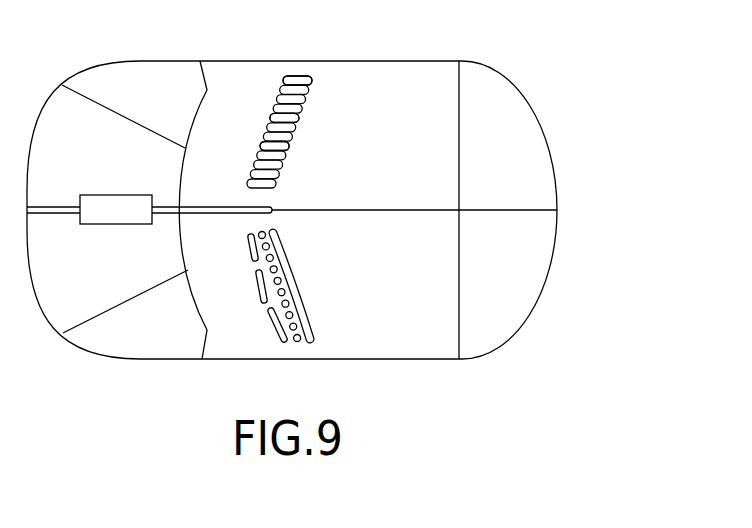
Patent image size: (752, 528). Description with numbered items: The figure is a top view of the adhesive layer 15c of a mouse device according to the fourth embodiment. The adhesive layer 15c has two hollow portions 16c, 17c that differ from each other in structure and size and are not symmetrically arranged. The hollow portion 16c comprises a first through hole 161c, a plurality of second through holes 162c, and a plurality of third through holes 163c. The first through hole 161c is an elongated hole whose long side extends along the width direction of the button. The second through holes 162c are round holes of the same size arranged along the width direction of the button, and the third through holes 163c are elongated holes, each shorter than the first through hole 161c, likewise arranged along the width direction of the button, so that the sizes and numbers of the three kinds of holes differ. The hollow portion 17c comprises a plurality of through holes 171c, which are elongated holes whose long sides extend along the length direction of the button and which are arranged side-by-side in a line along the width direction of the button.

The adhesive layer 15c is at (558, 175).
The hollow portion 17c is at (289, 73).
The through holes 171c is at (253, 143).
The hollow portion 16c is at (264, 322).
The first through hole 161c is at (318, 326).
The second through holes 162c is at (280, 326).
The third through holes 163c is at (254, 282).